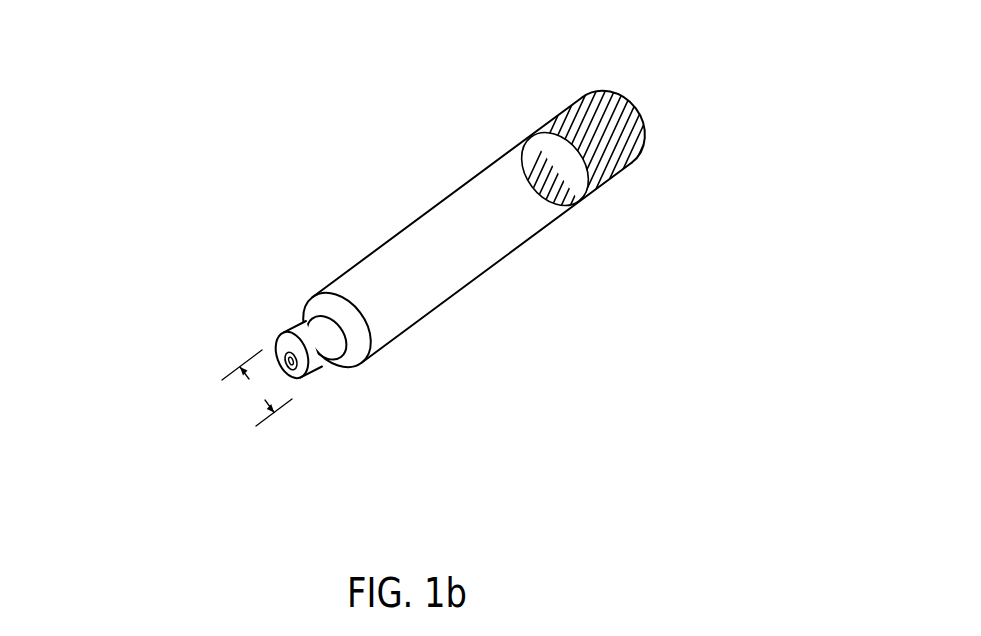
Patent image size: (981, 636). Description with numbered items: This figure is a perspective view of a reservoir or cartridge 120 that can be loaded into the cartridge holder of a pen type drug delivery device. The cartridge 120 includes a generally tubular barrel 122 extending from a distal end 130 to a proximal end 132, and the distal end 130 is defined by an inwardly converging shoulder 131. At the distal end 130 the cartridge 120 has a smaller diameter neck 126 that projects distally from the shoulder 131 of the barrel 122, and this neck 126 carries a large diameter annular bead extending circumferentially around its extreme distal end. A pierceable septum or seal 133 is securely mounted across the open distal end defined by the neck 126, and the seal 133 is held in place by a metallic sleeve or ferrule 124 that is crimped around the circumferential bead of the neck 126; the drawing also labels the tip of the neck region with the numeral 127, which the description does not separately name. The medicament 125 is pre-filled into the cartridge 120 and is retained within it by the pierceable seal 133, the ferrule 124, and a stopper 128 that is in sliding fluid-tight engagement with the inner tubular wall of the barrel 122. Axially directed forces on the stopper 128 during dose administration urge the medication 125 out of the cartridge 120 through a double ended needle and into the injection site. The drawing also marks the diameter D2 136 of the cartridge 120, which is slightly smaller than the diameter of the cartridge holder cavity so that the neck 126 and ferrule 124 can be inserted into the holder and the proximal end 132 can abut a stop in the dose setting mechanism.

The cartridge 120 is at (503, 193).
The tubular barrel 122 is at (524, 243).
The ferrule 124 is at (321, 367).
The medicament 125 is at (462, 268).
The neck 126 is at (276, 302).
The nozzle tip 127 is at (277, 338).
The stopper 128 is at (580, 107).
The distal end 130 is at (292, 282).
The shoulder 131 is at (370, 353).
The proximal end 132 is at (638, 111).
The pierceable seal 133 is at (304, 378).
The diameter D2 136 is at (300, 428).
The diameter D2 is at (257, 388).